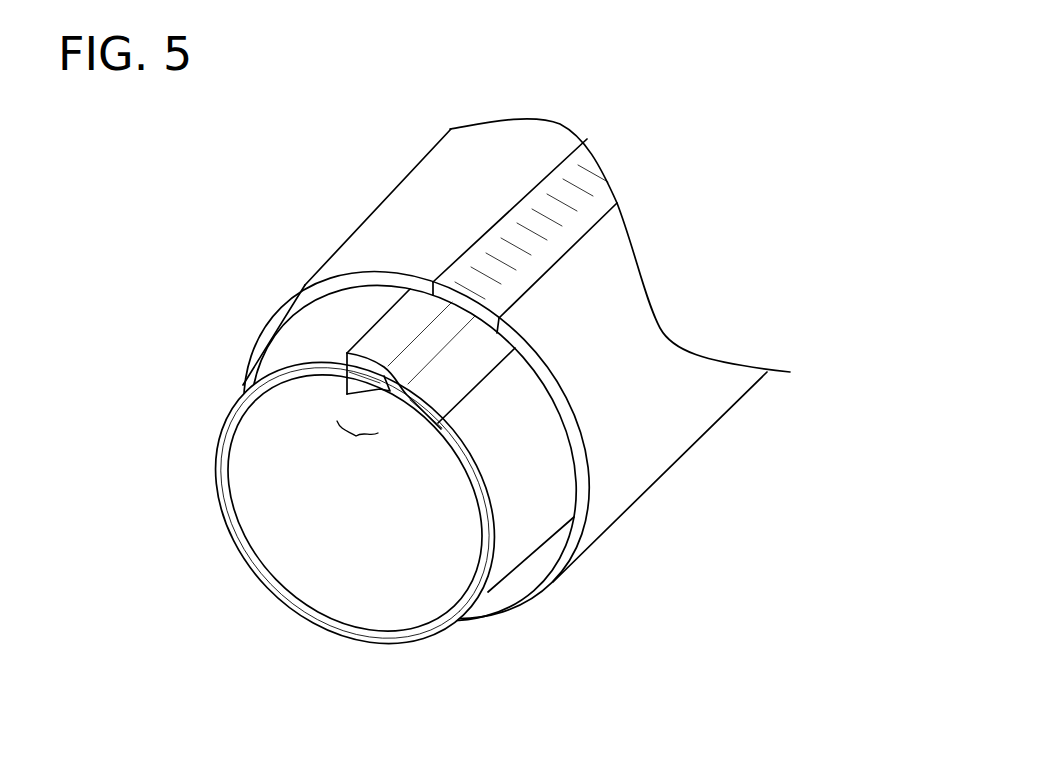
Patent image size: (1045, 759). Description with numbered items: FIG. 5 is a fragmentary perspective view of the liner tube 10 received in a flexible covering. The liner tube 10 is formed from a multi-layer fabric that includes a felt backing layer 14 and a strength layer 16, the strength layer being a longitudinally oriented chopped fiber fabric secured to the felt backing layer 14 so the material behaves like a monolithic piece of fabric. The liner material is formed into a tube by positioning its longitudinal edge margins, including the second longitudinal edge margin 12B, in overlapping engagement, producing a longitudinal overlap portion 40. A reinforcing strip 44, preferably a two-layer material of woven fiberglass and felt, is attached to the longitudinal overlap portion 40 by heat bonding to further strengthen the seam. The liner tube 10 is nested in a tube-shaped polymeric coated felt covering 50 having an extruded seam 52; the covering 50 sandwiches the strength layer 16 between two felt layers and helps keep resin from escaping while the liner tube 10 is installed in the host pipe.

The liner tube 10 is at (243, 602).
The second longitudinal edge margin 12B is at (362, 400).
The felt backing layer 14 is at (426, 589).
The strength layer 16 is at (330, 339).
The longitudinal overlap portion 40 is at (356, 449).
The reinforcing strip 44 is at (455, 382).
The polymeric coated felt covering 50 is at (535, 120).
The extruded seam 52 is at (595, 165).